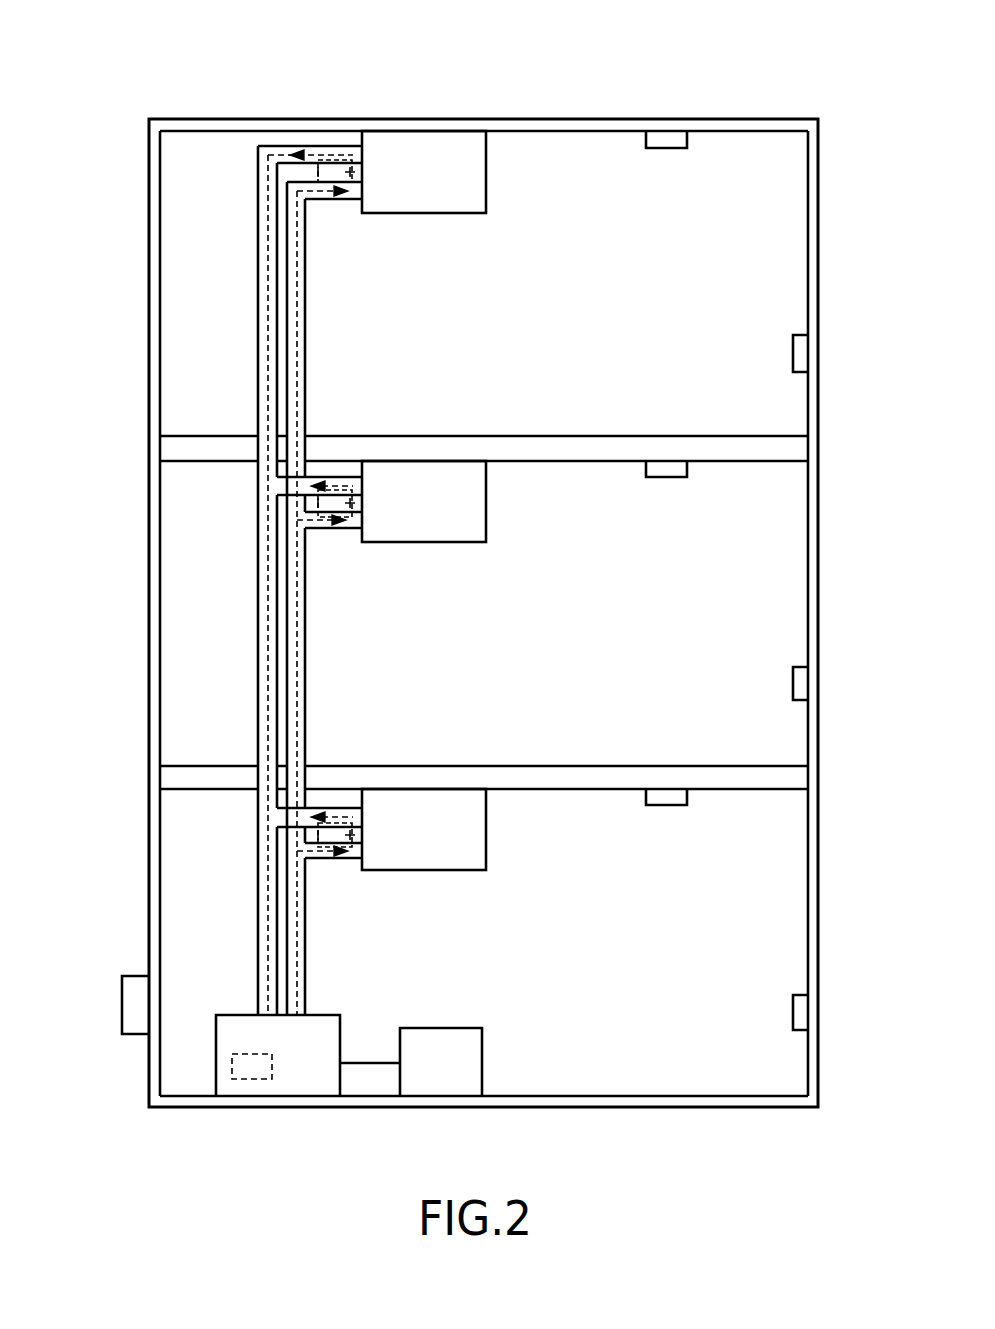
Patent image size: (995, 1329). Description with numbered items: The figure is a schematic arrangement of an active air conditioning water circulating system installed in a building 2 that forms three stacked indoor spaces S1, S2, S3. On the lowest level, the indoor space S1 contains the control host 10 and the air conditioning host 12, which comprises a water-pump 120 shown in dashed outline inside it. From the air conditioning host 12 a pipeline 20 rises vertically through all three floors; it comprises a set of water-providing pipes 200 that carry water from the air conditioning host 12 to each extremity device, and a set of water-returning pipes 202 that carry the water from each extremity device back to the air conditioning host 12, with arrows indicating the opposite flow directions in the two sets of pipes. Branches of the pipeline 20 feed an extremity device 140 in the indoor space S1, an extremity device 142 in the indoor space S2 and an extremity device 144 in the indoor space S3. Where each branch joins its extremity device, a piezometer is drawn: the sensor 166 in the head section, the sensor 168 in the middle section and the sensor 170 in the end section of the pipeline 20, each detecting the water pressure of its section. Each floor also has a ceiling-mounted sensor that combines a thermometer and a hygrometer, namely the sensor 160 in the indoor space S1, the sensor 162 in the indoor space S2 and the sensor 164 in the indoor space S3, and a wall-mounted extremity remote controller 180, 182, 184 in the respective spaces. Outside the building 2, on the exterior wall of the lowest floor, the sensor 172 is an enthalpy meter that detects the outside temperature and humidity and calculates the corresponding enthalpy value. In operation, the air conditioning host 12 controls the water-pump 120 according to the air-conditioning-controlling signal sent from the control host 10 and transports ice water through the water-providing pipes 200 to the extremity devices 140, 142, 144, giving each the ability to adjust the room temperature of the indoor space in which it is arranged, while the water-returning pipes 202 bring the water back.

The building 2 is at (766, 108).
The indoor space S1 is at (177, 822).
The indoor space S2 is at (190, 552).
The indoor space S3 is at (190, 342).
The pipeline 20 is at (262, 52).
The water-providing pipes 200 is at (306, 190).
The water-returning pipes 202 is at (274, 152).
The control host 10 is at (443, 1080).
The air conditioning host 12 is at (315, 1078).
The water-pump 120 is at (247, 1075).
The extremity device 140 is at (477, 850).
The extremity device 142 is at (477, 520).
The extremity device 144 is at (477, 190).
The sensor 160 is at (664, 798).
The sensor 162 is at (664, 470).
The sensor 164 is at (664, 140).
The sensor 166 is at (355, 835).
The sensor 168 is at (355, 503).
The sensor 170 is at (355, 172).
The sensor 172 is at (132, 1008).
The extremity remote controller 180 is at (800, 1011).
The extremity remote controller 182 is at (800, 683).
The extremity remote controller 184 is at (800, 354).